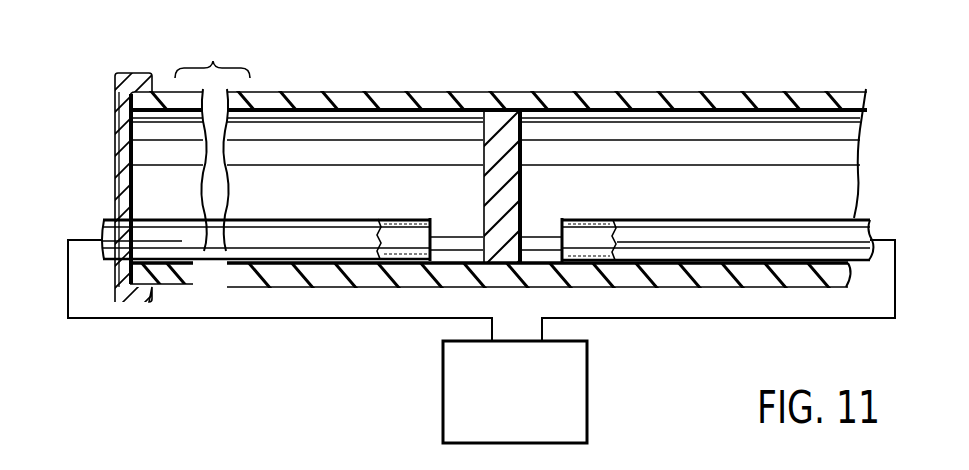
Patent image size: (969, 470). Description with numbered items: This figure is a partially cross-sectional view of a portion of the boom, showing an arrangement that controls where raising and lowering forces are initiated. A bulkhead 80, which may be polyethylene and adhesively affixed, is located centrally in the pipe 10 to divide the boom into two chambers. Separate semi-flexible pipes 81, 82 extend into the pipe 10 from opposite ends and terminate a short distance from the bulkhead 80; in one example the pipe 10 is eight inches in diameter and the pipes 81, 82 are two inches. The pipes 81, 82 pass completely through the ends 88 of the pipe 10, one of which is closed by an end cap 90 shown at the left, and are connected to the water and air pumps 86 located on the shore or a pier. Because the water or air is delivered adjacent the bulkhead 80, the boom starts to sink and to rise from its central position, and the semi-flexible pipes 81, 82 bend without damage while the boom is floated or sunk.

The pipe 10 is at (547, 91).
The bulkhead 80 is at (523, 182).
The semi-flexible pipe 81 is at (341, 218).
The semi-flexible pipe 82 is at (738, 218).
The water and air pumps 86 is at (588, 381).
The ends of the pipe 88 is at (140, 192).
The end cap 90 is at (115, 132).